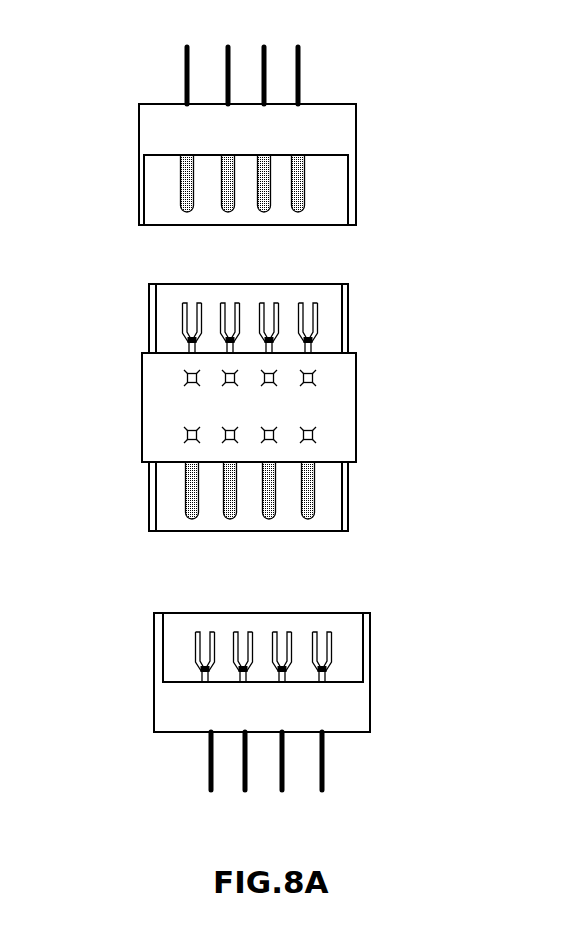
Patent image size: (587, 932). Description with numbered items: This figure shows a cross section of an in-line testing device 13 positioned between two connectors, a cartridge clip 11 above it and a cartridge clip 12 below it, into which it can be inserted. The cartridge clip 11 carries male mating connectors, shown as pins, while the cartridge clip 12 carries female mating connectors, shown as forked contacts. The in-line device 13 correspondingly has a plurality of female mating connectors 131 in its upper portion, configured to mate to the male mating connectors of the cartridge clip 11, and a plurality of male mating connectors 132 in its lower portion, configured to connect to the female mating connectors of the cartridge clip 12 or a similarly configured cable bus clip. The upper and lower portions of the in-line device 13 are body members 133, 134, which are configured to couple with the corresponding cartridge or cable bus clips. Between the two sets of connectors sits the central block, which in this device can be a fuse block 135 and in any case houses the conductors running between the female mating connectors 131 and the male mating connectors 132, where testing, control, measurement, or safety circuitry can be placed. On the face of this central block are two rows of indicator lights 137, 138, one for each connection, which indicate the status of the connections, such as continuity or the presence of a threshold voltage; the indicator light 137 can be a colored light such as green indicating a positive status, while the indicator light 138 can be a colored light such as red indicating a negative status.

The cartridge clip 11 is at (106, 91).
The cartridge clip 12 is at (114, 626).
The in-line device 13 is at (235, 415).
The female mating connectors 131 is at (321, 304).
The male mating connectors 132 is at (311, 518).
The body member 133 is at (149, 302).
The body member 134 is at (149, 518).
The fuse block 135 is at (338, 412).
The indicator light 137 is at (177, 379).
The indicator light 138 is at (177, 437).